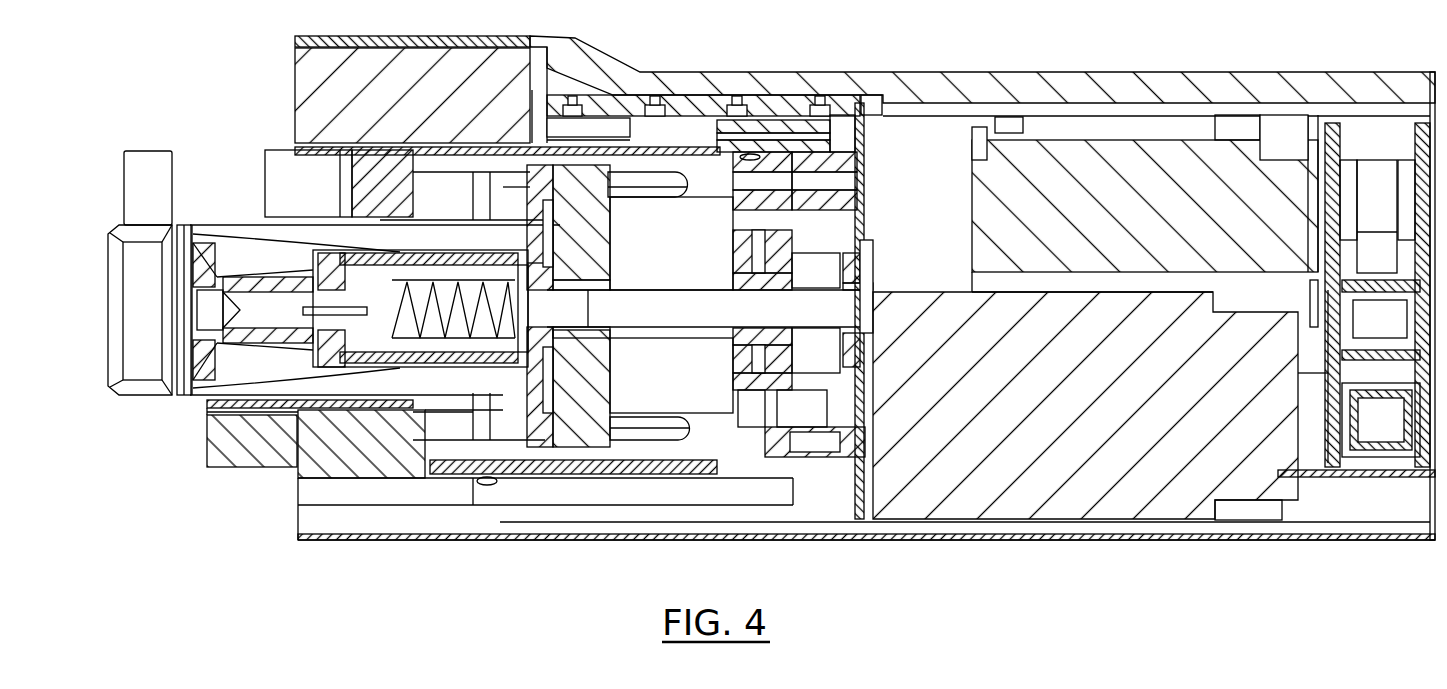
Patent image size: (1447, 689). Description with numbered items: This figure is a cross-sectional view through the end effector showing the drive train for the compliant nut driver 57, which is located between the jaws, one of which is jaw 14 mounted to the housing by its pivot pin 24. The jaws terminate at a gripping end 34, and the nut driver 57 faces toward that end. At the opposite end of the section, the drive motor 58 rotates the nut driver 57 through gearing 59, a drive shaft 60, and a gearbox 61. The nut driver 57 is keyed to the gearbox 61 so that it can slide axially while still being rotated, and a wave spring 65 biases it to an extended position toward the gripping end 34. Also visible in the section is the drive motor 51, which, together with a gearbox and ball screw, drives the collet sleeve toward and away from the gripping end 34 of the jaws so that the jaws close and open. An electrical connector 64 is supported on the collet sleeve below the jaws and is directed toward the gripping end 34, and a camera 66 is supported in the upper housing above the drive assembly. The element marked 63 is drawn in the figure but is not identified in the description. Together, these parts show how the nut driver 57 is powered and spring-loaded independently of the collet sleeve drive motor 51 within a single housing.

The jaw 14 is at (142, 392).
The pivot pin 24 is at (477, 195).
The gripping end 34 is at (100, 362).
The drive motor 51 is at (1118, 140).
The compliant nut driver 57 is at (242, 258).
The drive motor 58 is at (955, 520).
The gearing 59 is at (820, 497).
The drive shaft 60 is at (670, 306).
The gearbox 61 is at (607, 253).
The sealing ring 63 is at (705, 190).
The electrical connector 64 is at (250, 462).
The wave spring 65 is at (417, 330).
The camera 66 is at (293, 85).